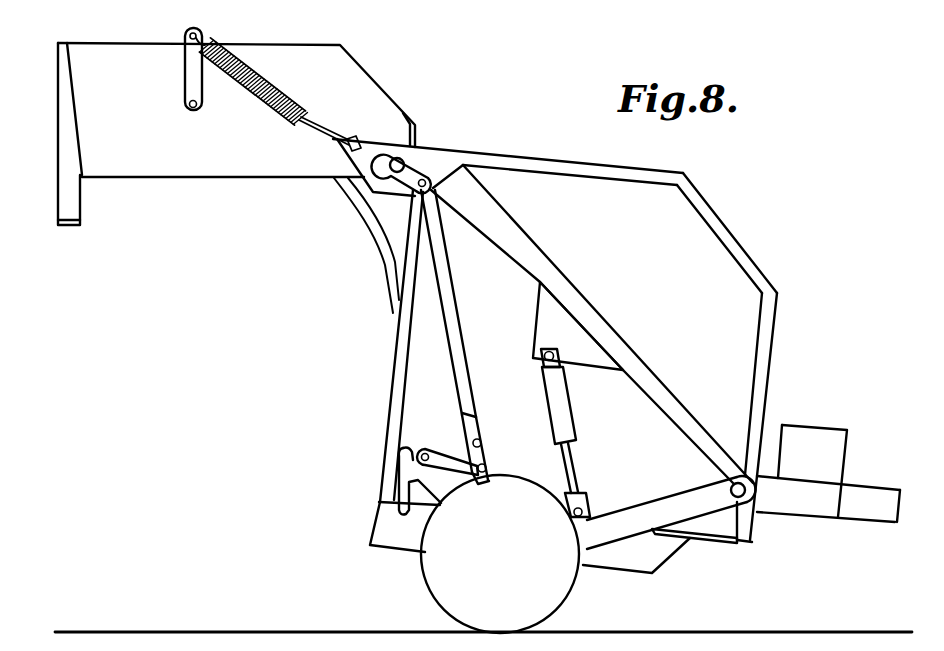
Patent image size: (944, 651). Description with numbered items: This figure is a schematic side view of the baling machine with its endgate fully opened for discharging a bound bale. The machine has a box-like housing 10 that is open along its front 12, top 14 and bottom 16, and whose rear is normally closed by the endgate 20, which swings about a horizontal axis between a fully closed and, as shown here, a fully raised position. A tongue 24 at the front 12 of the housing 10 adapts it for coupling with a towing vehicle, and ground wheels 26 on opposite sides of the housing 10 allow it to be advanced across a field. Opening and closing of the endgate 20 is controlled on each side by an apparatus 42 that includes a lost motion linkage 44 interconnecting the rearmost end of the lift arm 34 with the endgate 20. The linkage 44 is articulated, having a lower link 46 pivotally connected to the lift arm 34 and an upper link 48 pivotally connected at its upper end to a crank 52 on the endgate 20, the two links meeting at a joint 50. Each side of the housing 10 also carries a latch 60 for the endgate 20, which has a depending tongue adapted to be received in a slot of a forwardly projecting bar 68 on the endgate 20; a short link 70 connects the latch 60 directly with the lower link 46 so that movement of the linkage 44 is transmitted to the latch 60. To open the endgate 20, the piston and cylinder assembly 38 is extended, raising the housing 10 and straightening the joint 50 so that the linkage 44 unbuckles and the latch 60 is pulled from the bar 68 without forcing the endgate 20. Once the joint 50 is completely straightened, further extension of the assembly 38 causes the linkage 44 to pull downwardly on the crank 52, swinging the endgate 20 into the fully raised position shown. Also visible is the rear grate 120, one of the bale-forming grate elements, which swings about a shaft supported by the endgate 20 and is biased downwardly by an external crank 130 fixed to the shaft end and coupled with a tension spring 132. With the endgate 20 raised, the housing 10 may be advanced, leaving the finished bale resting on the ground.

The housing 10 is at (730, 218).
The front 12 is at (775, 328).
The top 14 is at (553, 158).
The bottom 16 is at (721, 543).
The endgate 20 is at (384, 92).
The tongue 24 is at (882, 492).
The ground wheels 26 is at (558, 603).
The lift arm 34 is at (652, 512).
The piston and cylinder assembly 38 is at (566, 405).
The apparatus 42 is at (462, 288).
The lost motion linkage 44 is at (478, 388).
The lower link 46 is at (490, 462).
The upper link 48 is at (458, 327).
The joint 50 is at (460, 436).
The crank 52 is at (413, 165).
The latch 60 is at (390, 472).
The bar 68 is at (63, 208).
The short link 70 is at (440, 465).
The rear grate 120 is at (368, 290).
The external crank 130 is at (190, 60).
The tension spring 132 is at (296, 86).